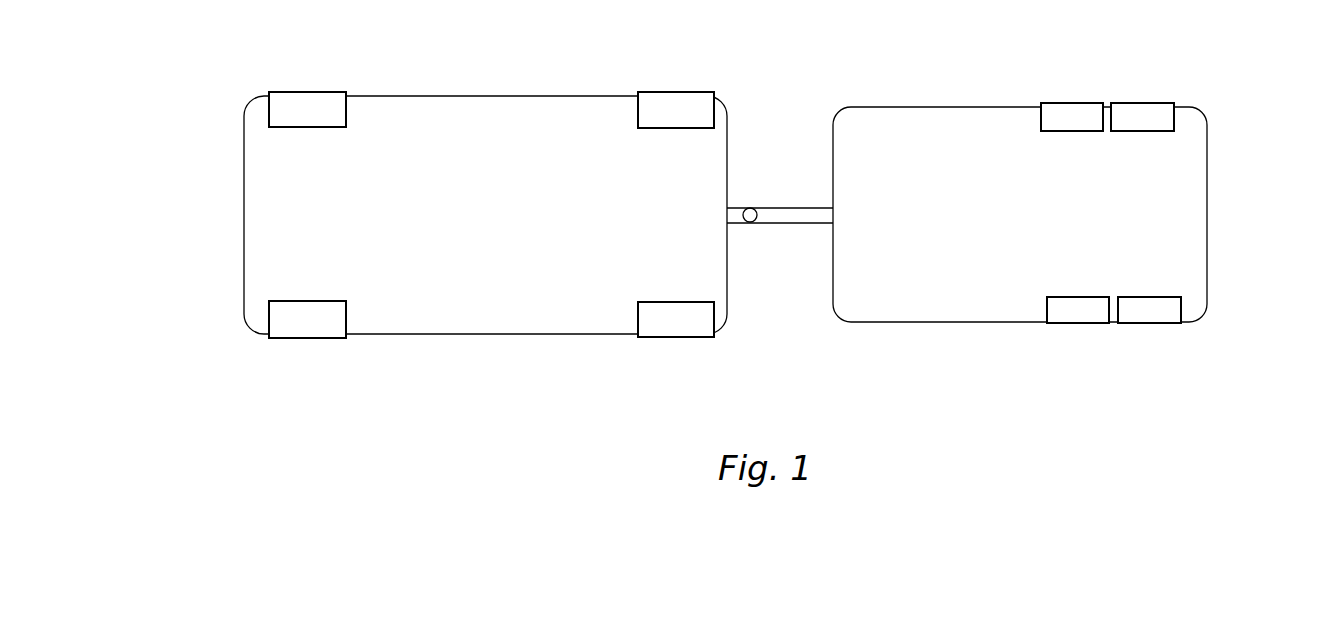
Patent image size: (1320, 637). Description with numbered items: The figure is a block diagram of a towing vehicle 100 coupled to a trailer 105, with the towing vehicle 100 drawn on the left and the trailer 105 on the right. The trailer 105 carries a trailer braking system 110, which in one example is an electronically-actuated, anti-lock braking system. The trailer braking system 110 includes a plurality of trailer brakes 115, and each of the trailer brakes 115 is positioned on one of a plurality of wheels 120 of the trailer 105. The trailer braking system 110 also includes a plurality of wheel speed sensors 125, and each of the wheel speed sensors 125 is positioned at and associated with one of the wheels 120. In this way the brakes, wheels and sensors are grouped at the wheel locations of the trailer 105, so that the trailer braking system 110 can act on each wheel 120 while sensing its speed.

The towing vehicle 100 is at (245, 142).
The trailer 105 is at (832, 122).
The trailer braking system 110 is at (1043, 395).
The trailer brakes 115 is at (1147, 143).
The wheels 120 is at (1163, 80).
The wheel speed sensors 125 is at (1175, 290).